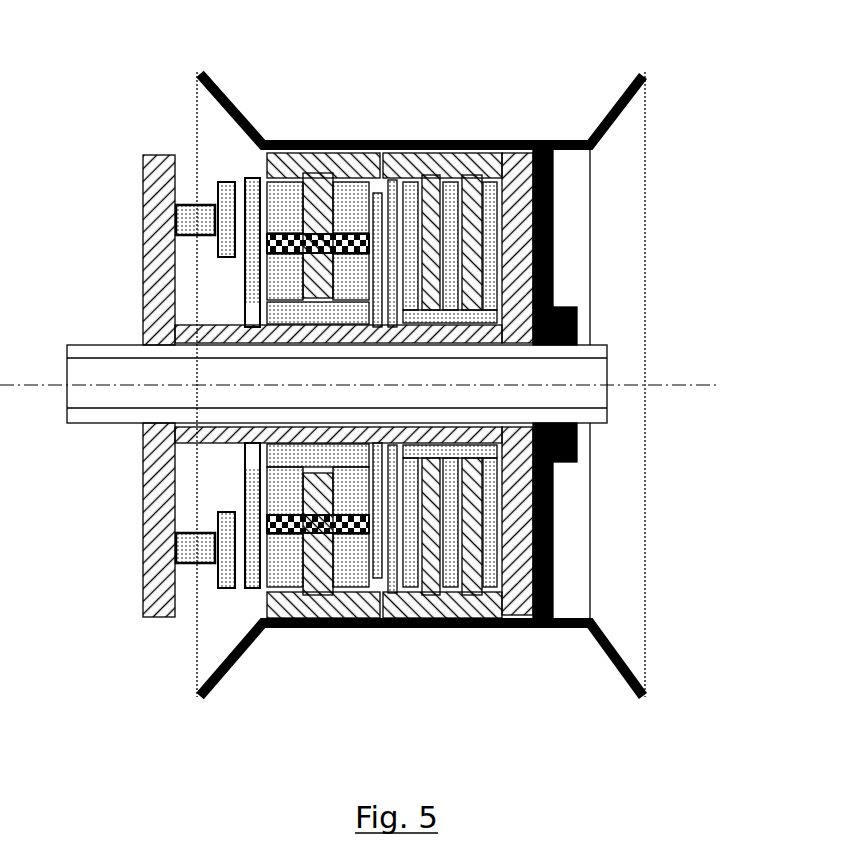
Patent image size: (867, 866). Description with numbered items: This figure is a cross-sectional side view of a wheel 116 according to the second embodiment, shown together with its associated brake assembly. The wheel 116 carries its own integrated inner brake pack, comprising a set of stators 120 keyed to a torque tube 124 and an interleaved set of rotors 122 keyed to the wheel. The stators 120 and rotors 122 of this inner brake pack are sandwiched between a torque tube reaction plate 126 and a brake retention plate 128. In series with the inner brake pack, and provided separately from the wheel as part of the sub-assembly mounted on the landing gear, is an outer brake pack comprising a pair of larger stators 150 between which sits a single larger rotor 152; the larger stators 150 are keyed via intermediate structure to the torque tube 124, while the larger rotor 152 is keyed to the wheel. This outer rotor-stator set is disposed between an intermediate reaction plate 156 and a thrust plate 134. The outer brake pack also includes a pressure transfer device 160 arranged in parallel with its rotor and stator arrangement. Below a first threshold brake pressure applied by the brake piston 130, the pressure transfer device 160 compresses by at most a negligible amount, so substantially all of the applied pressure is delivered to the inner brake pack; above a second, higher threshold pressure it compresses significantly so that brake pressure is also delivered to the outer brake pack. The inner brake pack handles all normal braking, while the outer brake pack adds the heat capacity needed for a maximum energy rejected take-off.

The wheel 116 is at (525, 93).
The stators 120 is at (410, 190).
The rotors 122 is at (468, 583).
The torque tube 124 is at (173, 323).
The torque tube reaction plate 126 is at (525, 250).
The brake retention plate 128 is at (402, 593).
The brake piston 130 is at (192, 213).
The thrust plate 134 is at (253, 577).
The larger stators 150 is at (287, 190).
The larger rotor 152 is at (319, 190).
The intermediate reaction plate 156 is at (372, 572).
The pressure transfer device 160 is at (270, 523).